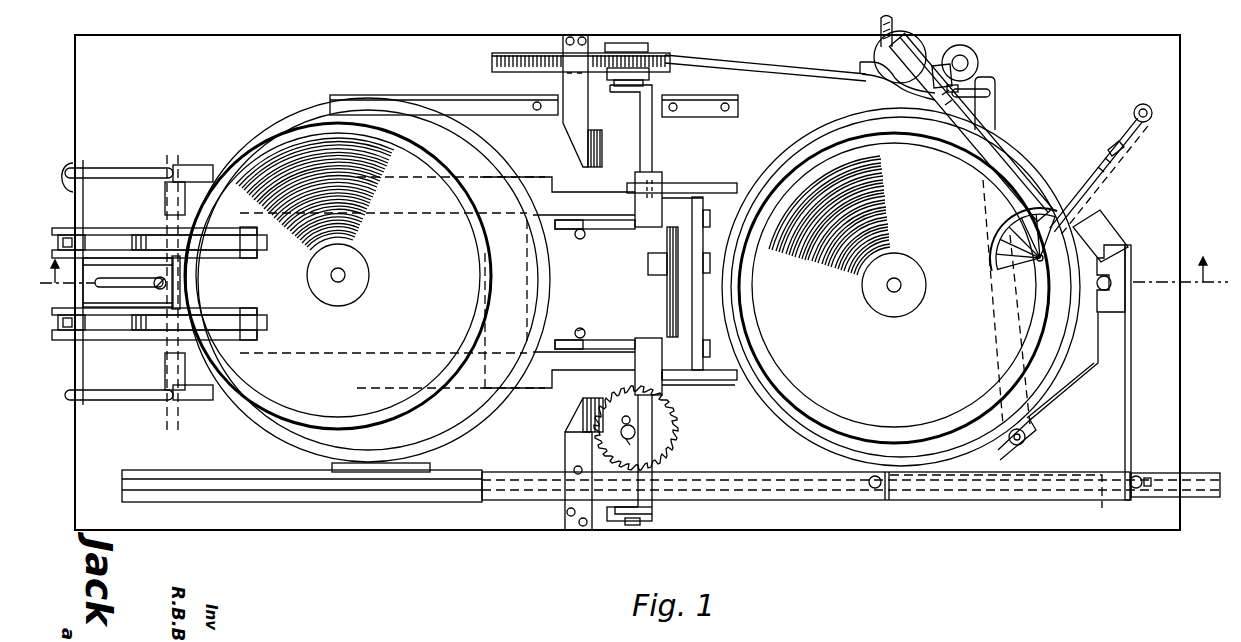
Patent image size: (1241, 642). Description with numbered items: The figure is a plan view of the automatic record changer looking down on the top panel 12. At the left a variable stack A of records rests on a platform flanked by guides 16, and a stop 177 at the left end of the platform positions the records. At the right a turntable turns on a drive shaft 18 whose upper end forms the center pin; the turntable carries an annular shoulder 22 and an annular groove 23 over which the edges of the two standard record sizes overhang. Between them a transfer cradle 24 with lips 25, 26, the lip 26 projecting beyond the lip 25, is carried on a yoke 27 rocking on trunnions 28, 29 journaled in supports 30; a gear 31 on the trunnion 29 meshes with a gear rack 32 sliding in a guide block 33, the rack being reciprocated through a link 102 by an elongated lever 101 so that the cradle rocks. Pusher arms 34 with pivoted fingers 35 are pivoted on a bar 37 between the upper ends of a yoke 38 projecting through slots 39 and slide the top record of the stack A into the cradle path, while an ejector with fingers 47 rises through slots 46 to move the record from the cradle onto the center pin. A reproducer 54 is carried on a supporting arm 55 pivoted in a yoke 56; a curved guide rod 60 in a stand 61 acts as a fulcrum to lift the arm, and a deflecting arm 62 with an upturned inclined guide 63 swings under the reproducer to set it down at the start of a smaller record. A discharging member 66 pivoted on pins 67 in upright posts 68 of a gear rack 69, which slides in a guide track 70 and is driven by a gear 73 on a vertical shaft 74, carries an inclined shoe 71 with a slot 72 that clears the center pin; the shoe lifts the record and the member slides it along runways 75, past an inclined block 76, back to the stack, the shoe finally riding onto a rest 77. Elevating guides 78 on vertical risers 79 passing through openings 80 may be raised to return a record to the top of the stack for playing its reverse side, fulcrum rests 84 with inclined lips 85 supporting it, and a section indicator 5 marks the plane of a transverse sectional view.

The top panel 12 is at (953, 531).
The guides 16 is at (445, 96).
The drive shaft 18 is at (900, 281).
The annular shoulder 22 is at (808, 440).
The annular groove 23 is at (940, 432).
The transfer cradle 24 is at (660, 200).
The lip 25 is at (687, 384).
The lip 26 is at (704, 314).
The yoke 27 is at (652, 135).
The trunnion 28 is at (622, 516).
The trunnion 29 is at (650, 80).
The supports 30 is at (618, 44).
The gear 31 is at (658, 54).
The gear rack 32 is at (492, 62).
The guide block 33 is at (512, 52).
The pusher arms 34 is at (103, 233).
The pivoted fingers 35 is at (243, 237).
The bar 37 is at (68, 163).
The yoke 38 is at (160, 398).
The slots 39 is at (182, 170).
The slots 46 is at (726, 183).
The fingers 47 is at (690, 378).
The reproducer 54 is at (1003, 243).
The supporting arm 55 is at (968, 160).
The yoke 56 is at (880, 40).
The curved guide rod 60 is at (858, 66).
The stand 61 is at (948, 60).
The deflecting arm 62 is at (1125, 138).
The inclined guide 63 is at (1082, 190).
The discharging member 66 is at (1110, 405).
The pins 67 is at (1148, 487).
The upright posts 68 is at (1136, 489).
The gear rack 69 is at (828, 491).
The guide track 70 is at (455, 503).
The inclined shoe 71 is at (1115, 300).
The slot 72 is at (1112, 282).
The gear 73 is at (668, 442).
The vertical shaft 74 is at (621, 432).
The runways 75 is at (612, 186).
The inclined block 76 is at (652, 272).
The rest 77 is at (1108, 230).
The elevating guides 78 is at (604, 231).
The vertical risers 79 is at (576, 330).
The openings 80 is at (577, 239).
The fulcrum rests 84 is at (563, 122).
The inclined lips 85 is at (600, 150).
The elongated lever 101 is at (997, 105).
The link 102 is at (802, 75).
The stop 177 is at (165, 290).
The section line 5 is at (634, 284).
The stack of records A is at (292, 160).